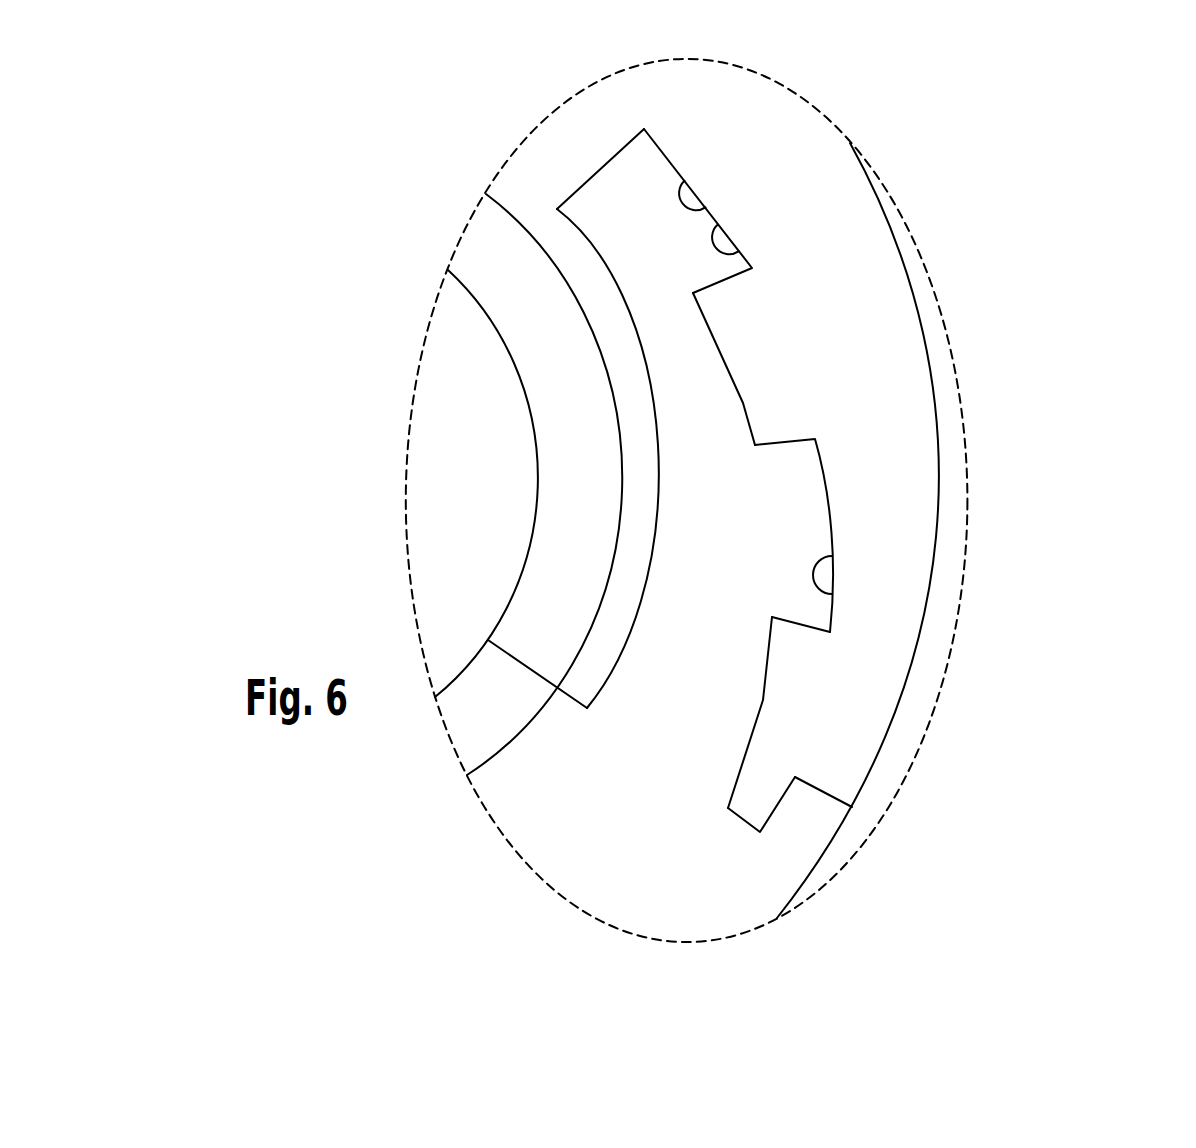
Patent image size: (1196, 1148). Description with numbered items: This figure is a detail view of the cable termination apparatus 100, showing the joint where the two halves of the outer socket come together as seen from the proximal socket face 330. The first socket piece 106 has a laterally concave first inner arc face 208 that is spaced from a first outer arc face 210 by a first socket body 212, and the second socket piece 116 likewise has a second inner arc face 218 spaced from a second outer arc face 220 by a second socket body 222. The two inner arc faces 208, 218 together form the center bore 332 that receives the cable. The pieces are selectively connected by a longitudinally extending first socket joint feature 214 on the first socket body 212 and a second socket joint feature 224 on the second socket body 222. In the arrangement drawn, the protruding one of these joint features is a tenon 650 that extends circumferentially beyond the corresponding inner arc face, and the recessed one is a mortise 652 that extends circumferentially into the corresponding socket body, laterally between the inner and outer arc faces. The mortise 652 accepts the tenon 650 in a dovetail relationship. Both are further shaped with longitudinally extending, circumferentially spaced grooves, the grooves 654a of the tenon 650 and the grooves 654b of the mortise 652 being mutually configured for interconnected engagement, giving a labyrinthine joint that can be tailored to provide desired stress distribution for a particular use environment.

The cable termination apparatus 100 is at (1066, 630).
The first socket piece 106 is at (858, 123).
The second socket piece 116 is at (434, 778).
The first inner arc face 208 is at (497, 287).
The first outer arc face 210 is at (925, 345).
The first socket body 212 is at (843, 321).
The first socket joint feature 214 is at (1018, 534).
The second inner arc face 218 is at (473, 700).
The second outer arc face 220 is at (818, 813).
The second socket body 222 is at (665, 825).
The second socket joint feature 224 is at (455, 638).
The proximal socket face 330 is at (700, 140).
The center bore 332 is at (492, 485).
The tenon 650 is at (745, 540).
The mortise 652 is at (738, 251).
The grooves of the tenon 654a is at (743, 403).
The grooves of the mortise 654b is at (706, 207).